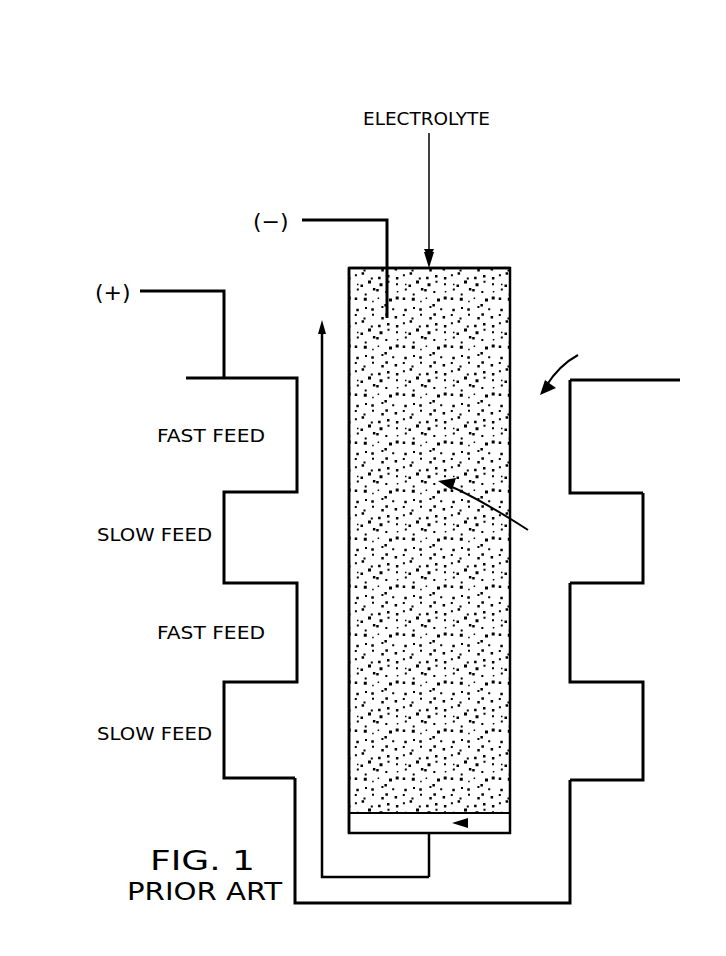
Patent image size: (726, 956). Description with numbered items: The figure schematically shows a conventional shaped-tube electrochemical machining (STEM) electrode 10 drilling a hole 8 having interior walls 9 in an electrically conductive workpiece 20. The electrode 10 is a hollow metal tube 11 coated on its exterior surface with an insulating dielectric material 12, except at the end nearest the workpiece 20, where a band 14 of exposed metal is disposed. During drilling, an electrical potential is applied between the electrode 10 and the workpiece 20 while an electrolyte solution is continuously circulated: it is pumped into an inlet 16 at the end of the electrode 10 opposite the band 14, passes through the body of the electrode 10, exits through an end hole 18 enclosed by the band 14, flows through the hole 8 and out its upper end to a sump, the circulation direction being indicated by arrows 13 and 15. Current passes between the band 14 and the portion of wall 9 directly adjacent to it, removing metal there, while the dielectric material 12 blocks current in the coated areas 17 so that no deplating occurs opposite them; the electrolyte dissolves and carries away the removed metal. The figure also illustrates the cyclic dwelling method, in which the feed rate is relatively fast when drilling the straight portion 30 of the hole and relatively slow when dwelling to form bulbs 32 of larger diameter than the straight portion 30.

The hole 8 is at (610, 366).
The interior walls 9 is at (296, 848).
The shaped-tube electrochemical machining electrode 10 is at (562, 312).
The hollow metal tube 11 is at (490, 268).
The insulating dielectric material 12 is at (348, 287).
The arrow 13 is at (428, 162).
The band of exposed metal 14 is at (466, 823).
The arrow 15 is at (320, 358).
The inlet 16 is at (432, 266).
The coated areas 17 is at (498, 518).
The end hole 18 is at (430, 836).
The electrically conductive workpiece 20 is at (676, 821).
The straight portion 30 is at (571, 440).
The bulbs 32 is at (644, 530).